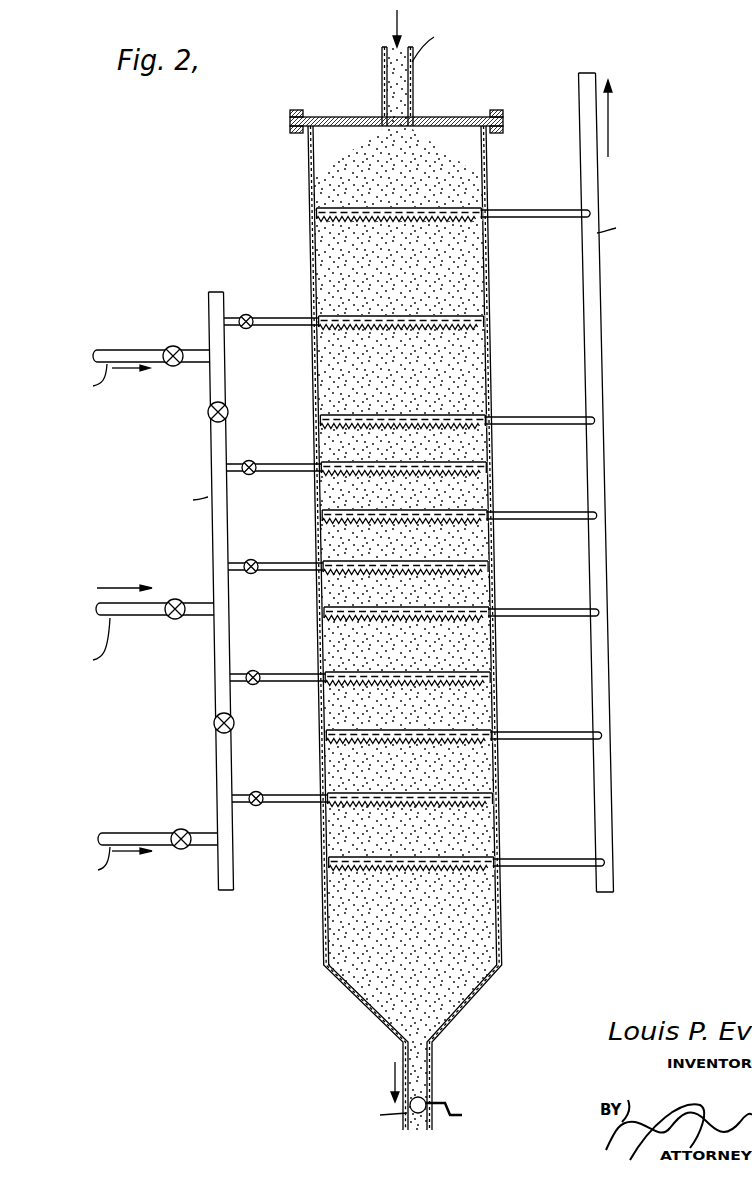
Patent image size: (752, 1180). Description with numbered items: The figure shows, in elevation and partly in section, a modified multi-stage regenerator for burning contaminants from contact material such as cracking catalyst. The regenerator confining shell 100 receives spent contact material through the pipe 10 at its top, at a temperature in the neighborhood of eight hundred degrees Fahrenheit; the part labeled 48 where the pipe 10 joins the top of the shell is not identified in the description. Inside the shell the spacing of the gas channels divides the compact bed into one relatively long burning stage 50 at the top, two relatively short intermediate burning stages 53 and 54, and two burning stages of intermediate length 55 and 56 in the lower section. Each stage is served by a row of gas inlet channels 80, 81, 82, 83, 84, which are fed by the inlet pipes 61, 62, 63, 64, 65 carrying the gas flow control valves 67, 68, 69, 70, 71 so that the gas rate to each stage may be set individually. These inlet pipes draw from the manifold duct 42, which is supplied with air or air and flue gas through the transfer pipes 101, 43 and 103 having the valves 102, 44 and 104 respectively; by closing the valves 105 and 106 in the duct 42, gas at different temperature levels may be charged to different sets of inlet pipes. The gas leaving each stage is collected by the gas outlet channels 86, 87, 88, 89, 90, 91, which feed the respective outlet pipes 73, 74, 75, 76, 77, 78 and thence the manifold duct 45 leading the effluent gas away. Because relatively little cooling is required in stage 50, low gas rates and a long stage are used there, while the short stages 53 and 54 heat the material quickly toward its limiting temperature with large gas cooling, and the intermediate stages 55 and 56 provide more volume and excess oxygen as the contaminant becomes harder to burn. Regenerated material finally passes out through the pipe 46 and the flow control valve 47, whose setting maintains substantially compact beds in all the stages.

The pipe 10 is at (413, 93).
The manifold duct 42 is at (215, 752).
The transfer pipe 43 is at (125, 616).
The valve 44 is at (178, 620).
The manifold duct 45 is at (599, 300).
The pipe 46 is at (434, 1066).
The flow control valve 47 is at (426, 1100).
The flange 48 is at (356, 116).
The burning stage 50 is at (483, 280).
The intermediate burning stage 53 is at (485, 440).
The intermediate burning stage 54 is at (488, 540).
The burning stage 55 is at (488, 645).
The burning stage 56 is at (490, 765).
The gas inlet pipe 61 is at (295, 318).
The gas inlet pipe 62 is at (296, 464).
The gas inlet pipe 63 is at (300, 563).
The gas inlet pipe 64 is at (302, 673).
The gas inlet pipe 65 is at (302, 794).
The gas flow control valve 67 is at (253, 337).
The gas flow control valve 68 is at (254, 484).
The gas flow control valve 69 is at (255, 582).
The gas flow control valve 70 is at (258, 692).
The gas flow control valve 71 is at (261, 813).
The gas outlet pipe 73 is at (572, 209).
The gas outlet pipe 74 is at (574, 416).
The gas outlet pipe 75 is at (576, 511).
The gas outlet pipe 76 is at (578, 608).
The gas outlet pipe 77 is at (590, 733).
The gas outlet pipe 78 is at (590, 857).
The gas inlet channel 80 is at (484, 322).
The gas inlet channel 81 is at (486, 468).
The gas inlet channel 82 is at (488, 568).
The gas inlet channel 83 is at (490, 678).
The gas inlet channel 84 is at (492, 800).
The gas outlet channel 86 is at (314, 214).
The gas outlet channel 87 is at (318, 417).
The gas outlet channel 88 is at (320, 513).
The gas outlet channel 89 is at (322, 611).
The gas outlet channel 90 is at (324, 731).
The gas outlet channel 91 is at (326, 864).
The regenerator confining shell 100 is at (308, 171).
The transfer pipe 101 is at (117, 348).
The valve 102 is at (182, 338).
The transfer pipe 103 is at (126, 832).
The valve 104 is at (190, 818).
The valve 105 is at (214, 723).
The valve 106 is at (208, 414).